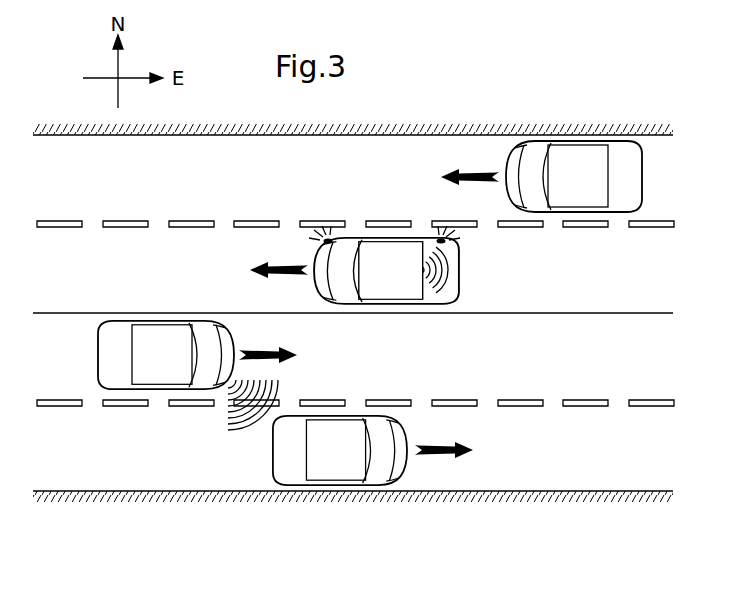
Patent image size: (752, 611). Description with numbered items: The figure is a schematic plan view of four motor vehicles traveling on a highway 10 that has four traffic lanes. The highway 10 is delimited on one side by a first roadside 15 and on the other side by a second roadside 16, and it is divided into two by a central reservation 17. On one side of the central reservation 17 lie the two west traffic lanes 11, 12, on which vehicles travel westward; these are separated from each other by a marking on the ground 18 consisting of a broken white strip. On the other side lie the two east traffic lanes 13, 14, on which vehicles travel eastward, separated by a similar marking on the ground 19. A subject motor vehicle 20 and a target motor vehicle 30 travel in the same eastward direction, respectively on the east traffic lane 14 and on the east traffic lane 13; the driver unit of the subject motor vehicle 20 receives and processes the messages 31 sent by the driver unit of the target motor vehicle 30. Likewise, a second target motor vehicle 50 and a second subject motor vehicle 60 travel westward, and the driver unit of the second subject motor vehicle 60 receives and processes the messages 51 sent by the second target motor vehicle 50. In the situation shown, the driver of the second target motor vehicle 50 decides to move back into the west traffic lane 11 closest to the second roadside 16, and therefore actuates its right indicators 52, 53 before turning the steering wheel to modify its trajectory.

The highway 10 is at (84, 523).
The west traffic lane 11 is at (25, 187).
The west traffic lane 12 is at (25, 278).
The east traffic lane 13 is at (25, 367).
The east traffic lane 14 is at (25, 462).
The first roadside 15 is at (639, 490).
The second roadside 16 is at (659, 132).
The central reservation 17 is at (649, 312).
The marking on the ground 18 is at (659, 218).
The marking on the ground 19 is at (638, 400).
The subject motor vehicle 20 is at (408, 430).
The target motor vehicle 30 is at (234, 333).
The messages 31 is at (240, 433).
The second target motor vehicle 50 is at (317, 290).
The messages 51 is at (459, 272).
The right indicator 52 is at (332, 242).
The right indicator 53 is at (440, 242).
The second subject motor vehicle 60 is at (504, 157).